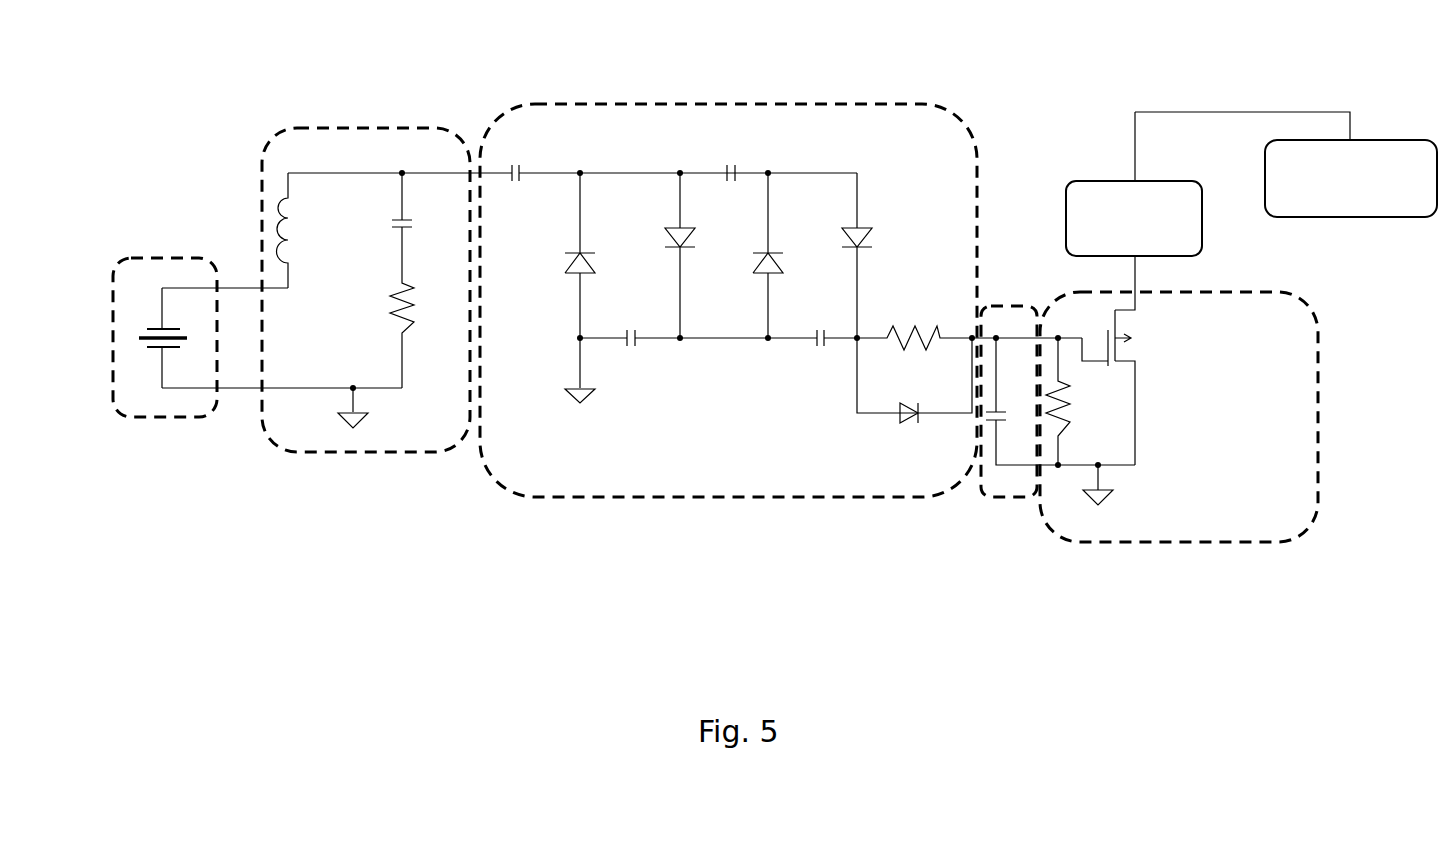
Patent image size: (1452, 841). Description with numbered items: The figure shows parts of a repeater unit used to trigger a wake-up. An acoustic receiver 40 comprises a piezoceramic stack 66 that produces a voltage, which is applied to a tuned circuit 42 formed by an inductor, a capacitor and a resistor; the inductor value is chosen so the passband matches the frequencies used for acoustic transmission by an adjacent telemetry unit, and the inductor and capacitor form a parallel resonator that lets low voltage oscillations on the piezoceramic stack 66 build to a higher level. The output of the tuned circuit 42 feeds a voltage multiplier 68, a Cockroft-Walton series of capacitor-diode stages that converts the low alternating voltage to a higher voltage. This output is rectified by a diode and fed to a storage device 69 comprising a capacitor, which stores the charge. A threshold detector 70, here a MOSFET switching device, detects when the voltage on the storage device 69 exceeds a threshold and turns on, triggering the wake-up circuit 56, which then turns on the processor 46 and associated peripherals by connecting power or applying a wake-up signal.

The acoustic receiver 40 is at (233, 303).
The tuned circuit 42 is at (358, 127).
The processor 46 is at (1388, 218).
The wake-up circuit 56 is at (1100, 181).
The piezoceramic stack 66 is at (148, 345).
The voltage multiplier 68 is at (737, 103).
The storage device 69 is at (998, 500).
The threshold detector 70 is at (1205, 547).